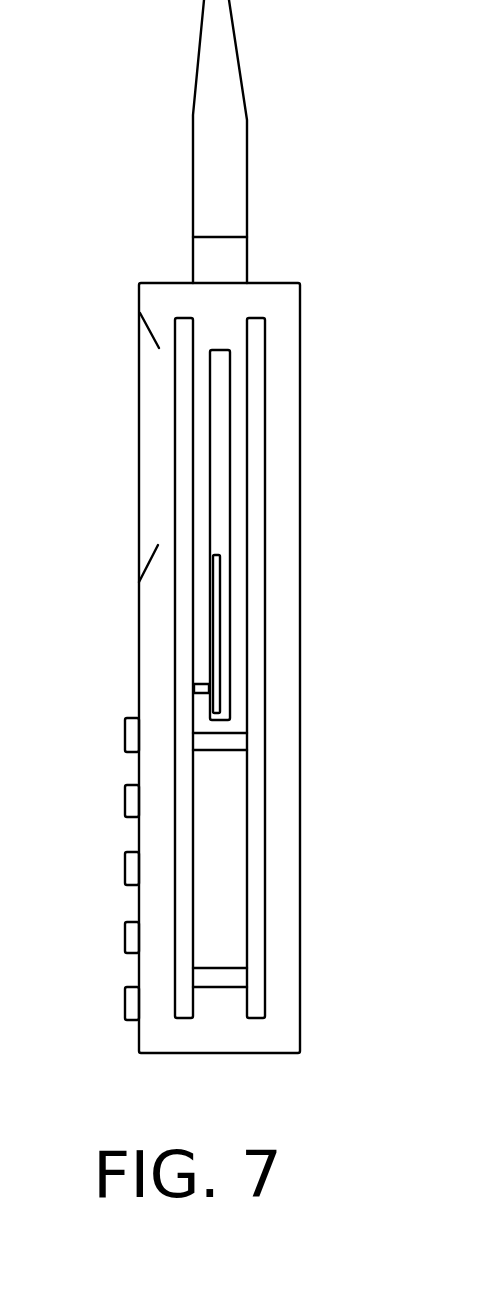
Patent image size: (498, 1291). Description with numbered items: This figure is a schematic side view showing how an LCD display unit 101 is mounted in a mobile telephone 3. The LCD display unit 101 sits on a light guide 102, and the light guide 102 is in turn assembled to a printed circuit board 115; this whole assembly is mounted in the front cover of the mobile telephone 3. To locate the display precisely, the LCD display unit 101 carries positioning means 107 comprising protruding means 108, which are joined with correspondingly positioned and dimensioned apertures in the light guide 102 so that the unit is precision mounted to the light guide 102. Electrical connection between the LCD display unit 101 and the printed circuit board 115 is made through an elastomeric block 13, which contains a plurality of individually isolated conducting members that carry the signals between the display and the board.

The mobile telephone 3 is at (336, 472).
The LCD display unit 101 is at (220, 450).
The light guide 102 is at (185, 650).
The positioning means 107 is at (215, 662).
The protruding means 108 is at (203, 693).
The elastomeric block 13 is at (232, 693).
The printed circuit board 115 is at (257, 920).